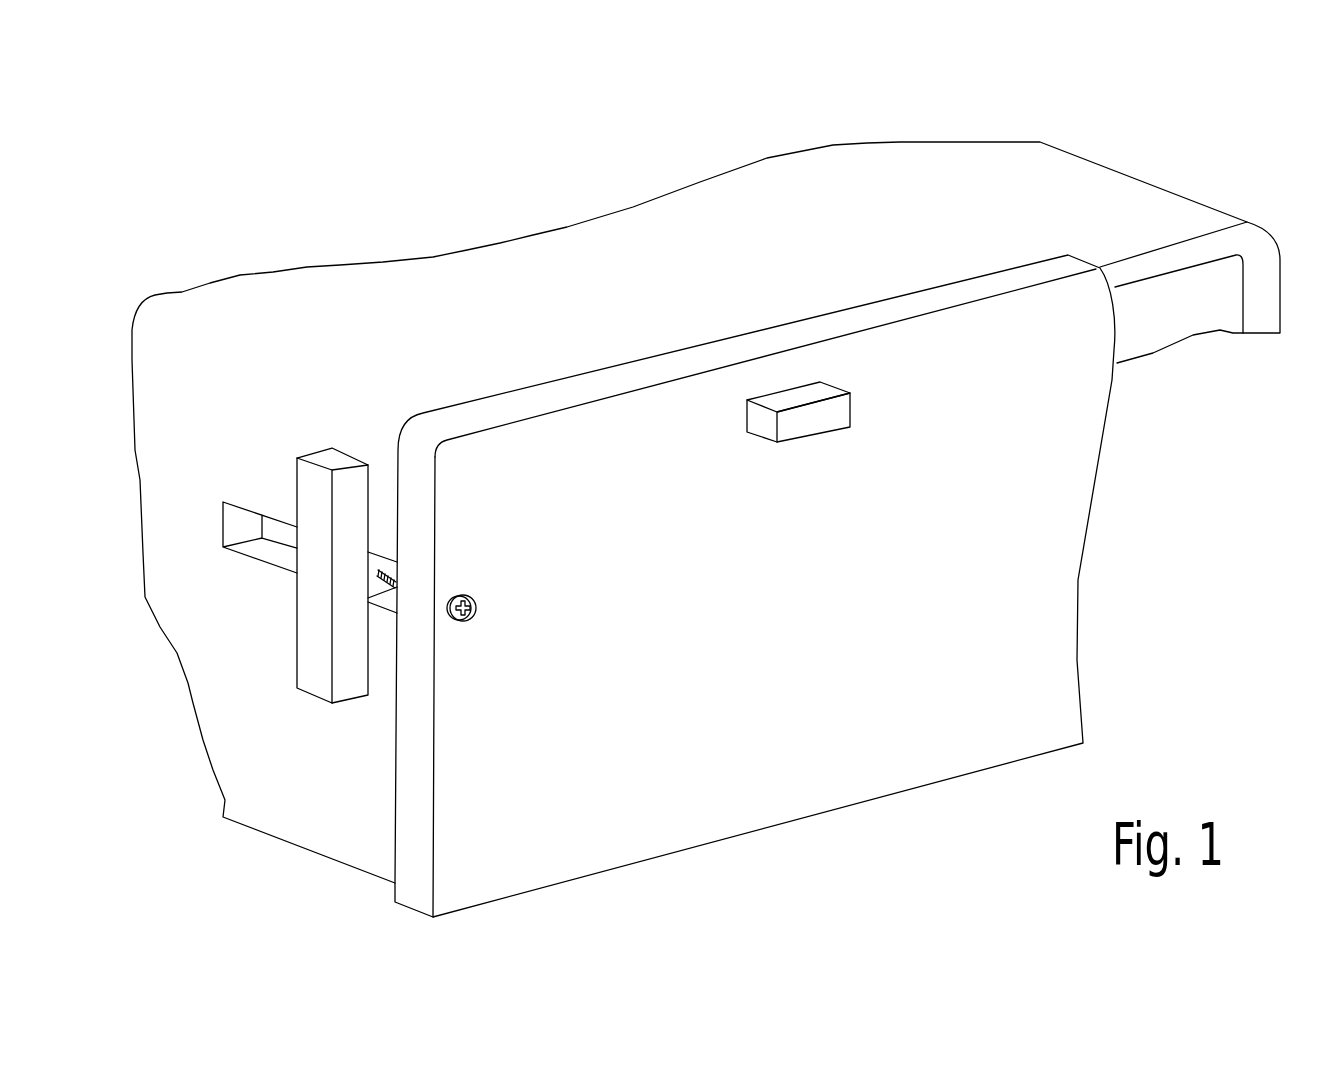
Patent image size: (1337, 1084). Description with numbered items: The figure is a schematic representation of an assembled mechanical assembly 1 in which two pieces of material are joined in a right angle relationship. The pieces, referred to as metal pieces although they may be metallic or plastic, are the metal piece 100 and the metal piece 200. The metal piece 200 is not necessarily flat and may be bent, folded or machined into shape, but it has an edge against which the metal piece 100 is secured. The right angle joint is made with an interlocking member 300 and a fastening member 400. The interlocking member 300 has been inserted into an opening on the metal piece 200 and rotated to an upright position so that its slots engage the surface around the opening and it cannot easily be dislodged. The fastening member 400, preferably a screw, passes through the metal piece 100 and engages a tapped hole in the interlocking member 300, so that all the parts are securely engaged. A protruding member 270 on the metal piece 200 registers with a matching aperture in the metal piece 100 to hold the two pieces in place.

The assembly 1 is at (493, 180).
The metal piece 100 is at (1057, 593).
The metal piece 200 is at (1103, 190).
The protruding member 270 is at (823, 412).
The interlocking member 300 is at (313, 625).
The fastening member 400 is at (462, 595).